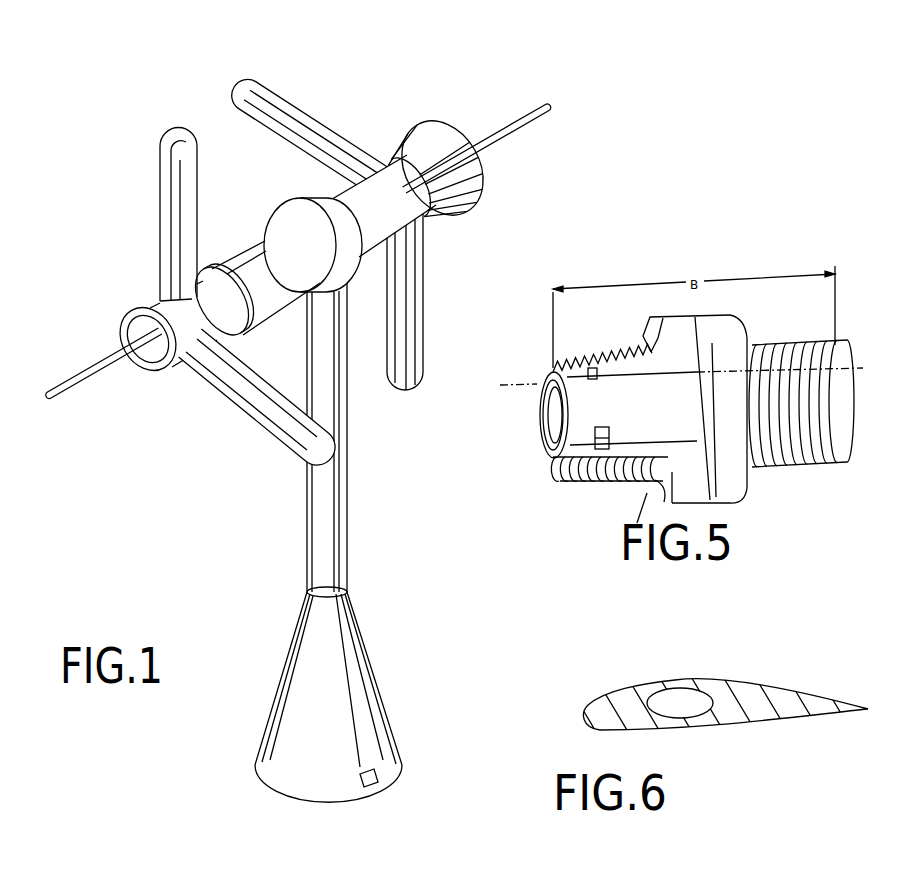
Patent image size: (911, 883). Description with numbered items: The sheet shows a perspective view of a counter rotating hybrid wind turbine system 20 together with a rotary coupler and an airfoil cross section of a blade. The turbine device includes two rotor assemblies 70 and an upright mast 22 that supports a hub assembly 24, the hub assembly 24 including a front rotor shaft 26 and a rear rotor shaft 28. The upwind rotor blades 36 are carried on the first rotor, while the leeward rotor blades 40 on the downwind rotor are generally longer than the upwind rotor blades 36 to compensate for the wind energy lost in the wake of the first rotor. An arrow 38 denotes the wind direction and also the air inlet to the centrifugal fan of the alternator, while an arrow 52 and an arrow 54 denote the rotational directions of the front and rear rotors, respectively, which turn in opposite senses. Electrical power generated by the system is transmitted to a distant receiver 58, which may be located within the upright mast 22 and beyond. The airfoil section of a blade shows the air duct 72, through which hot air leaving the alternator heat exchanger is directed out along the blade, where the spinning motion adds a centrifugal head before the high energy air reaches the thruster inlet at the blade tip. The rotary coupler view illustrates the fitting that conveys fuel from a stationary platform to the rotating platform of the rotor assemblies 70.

In FIG. 1, the hybrid wind turbine system 20 is at (521, 61).
In FIG. 1, the upright mast 22 is at (328, 535).
In FIG. 1, the hub assembly 24 is at (249, 226).
In FIG. 1, the front rotor shaft 26 is at (205, 262).
In FIG. 1, the rear rotor shaft 28 is at (384, 188).
In FIG. 1, the upwind rotor blades 36 is at (158, 213).
In FIG. 1, the arrow 38 is at (84, 397).
In FIG. 1, the leeward rotor blades 40 is at (318, 127).
In FIG. 6, the leeward rotor blades 40 is at (760, 693).
In FIG. 1, the arrow 52 is at (180, 398).
In FIG. 1, the arrow 54 is at (476, 123).
In FIG. 1, the distant receiver 58 is at (372, 786).
In FIG. 1, the rotor assemblies 70 is at (405, 393).
In FIG. 6, the air duct 72 is at (678, 692).